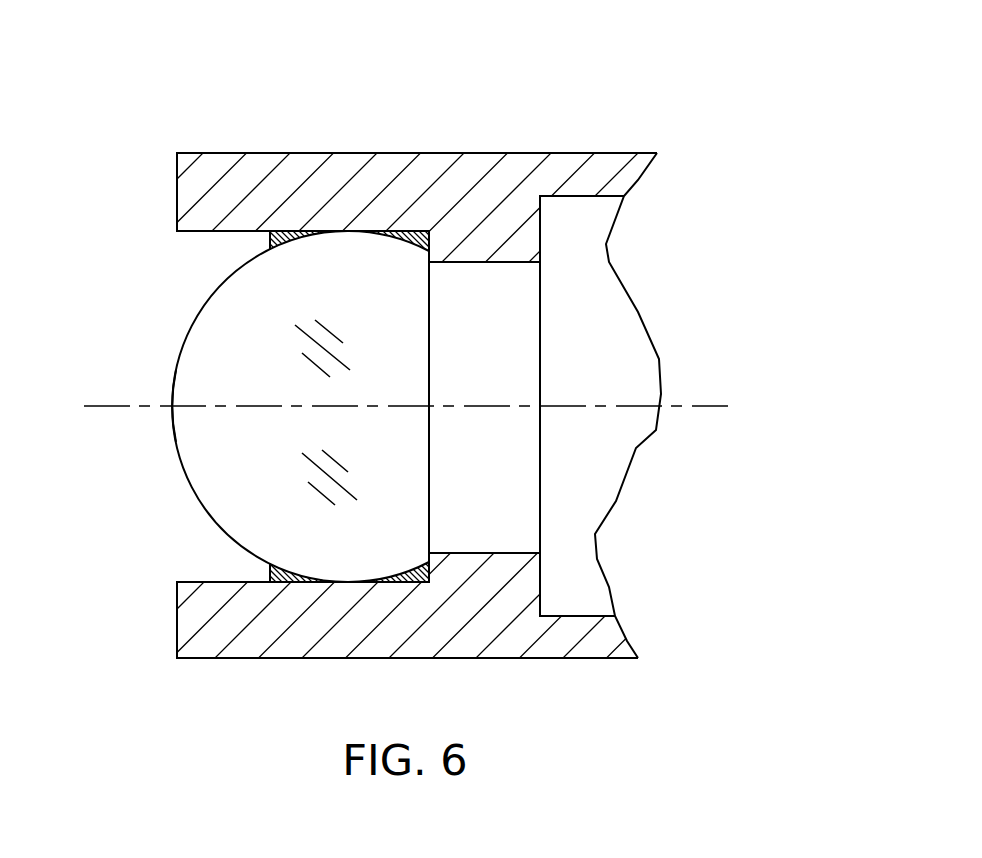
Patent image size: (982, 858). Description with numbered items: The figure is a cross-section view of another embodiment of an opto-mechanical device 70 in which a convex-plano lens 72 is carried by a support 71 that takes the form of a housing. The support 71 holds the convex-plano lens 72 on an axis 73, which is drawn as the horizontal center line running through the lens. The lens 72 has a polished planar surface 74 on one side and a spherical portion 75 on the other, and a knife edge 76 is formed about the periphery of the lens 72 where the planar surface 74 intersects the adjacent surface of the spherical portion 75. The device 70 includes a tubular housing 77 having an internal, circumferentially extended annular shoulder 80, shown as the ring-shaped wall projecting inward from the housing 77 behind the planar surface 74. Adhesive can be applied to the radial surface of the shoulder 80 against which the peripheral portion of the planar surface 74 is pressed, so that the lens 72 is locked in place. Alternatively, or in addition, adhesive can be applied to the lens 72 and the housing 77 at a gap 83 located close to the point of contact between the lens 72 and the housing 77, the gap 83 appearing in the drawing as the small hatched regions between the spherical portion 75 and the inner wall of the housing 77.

The opto-mechanical device 70 is at (505, 122).
The support 71 is at (258, 152).
The convex-plano lens 72 is at (193, 370).
The axis 73 is at (700, 403).
The polished planar surface 74 is at (429, 472).
The spherical portion 75 is at (176, 425).
The knife edge 76 is at (428, 562).
The tubular housing 77 is at (256, 640).
The annular shoulder 80 is at (500, 230).
The gap 83 is at (308, 582).